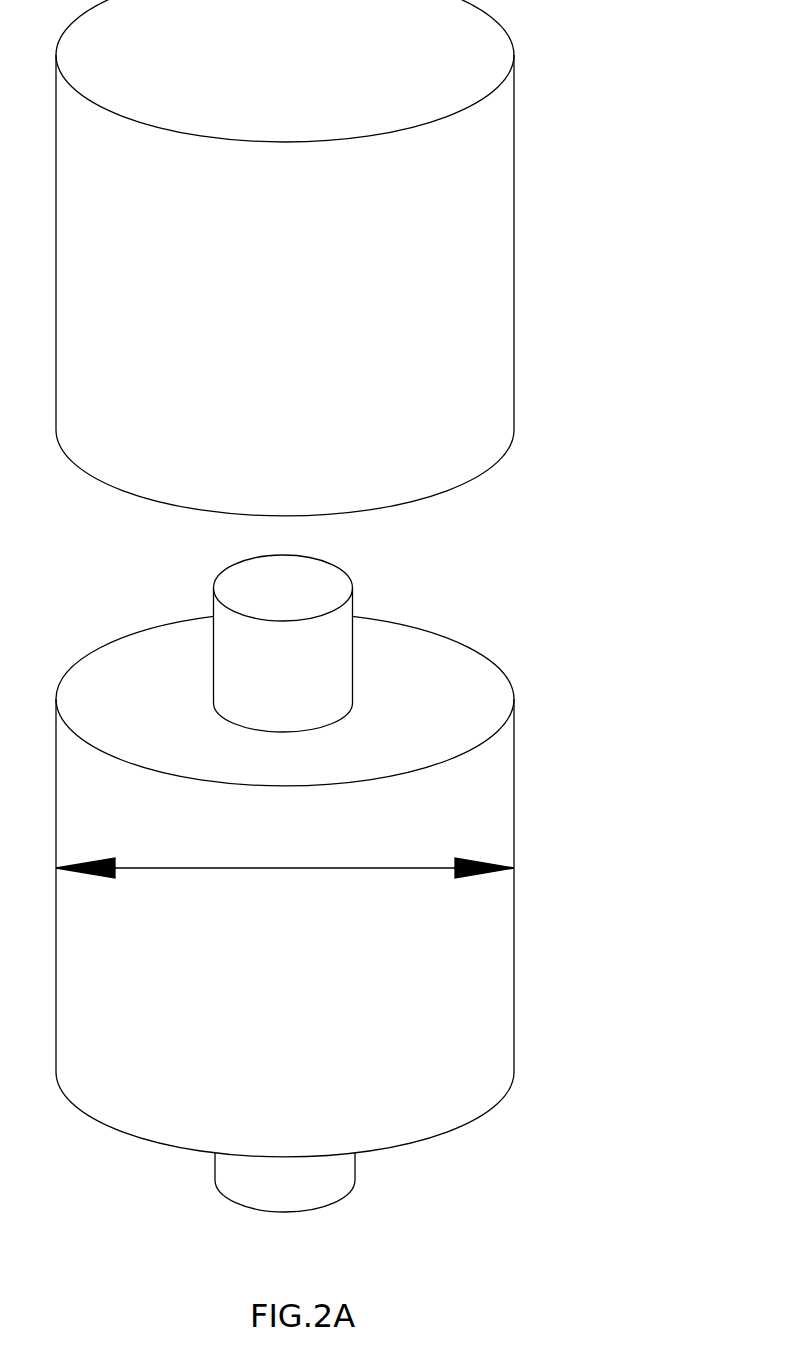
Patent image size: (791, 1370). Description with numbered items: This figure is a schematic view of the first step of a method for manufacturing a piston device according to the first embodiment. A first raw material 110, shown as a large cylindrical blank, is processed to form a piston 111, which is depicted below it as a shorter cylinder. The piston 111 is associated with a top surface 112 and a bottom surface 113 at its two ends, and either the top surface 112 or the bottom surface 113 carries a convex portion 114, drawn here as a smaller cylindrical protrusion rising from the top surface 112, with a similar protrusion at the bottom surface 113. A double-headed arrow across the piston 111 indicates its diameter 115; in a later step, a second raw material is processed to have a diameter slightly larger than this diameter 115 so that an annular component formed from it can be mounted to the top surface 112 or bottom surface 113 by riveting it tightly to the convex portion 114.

The first raw material 110 is at (515, 207).
The piston 111 is at (488, 967).
The top surface 112 is at (445, 700).
The bottom surface 113 is at (488, 1110).
The convex portion 114 is at (283, 588).
The diameter 115 is at (485, 865).